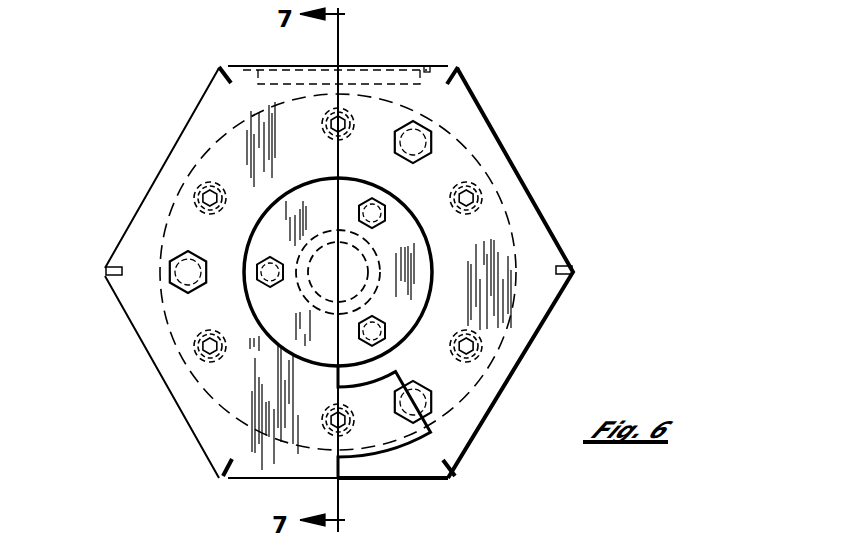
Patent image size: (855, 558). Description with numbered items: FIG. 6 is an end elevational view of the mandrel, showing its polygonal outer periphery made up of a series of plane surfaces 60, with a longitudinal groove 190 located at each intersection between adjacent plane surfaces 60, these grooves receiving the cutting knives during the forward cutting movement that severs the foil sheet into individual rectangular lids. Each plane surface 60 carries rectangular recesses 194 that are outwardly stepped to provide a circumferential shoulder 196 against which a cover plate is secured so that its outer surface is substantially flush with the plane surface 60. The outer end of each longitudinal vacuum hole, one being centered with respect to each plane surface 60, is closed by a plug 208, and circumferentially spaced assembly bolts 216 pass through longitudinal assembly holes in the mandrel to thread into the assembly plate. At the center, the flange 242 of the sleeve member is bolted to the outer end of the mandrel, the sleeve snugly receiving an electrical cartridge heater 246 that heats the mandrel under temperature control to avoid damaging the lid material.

The plane surface 60 is at (238, 66).
The longitudinal groove 190 is at (220, 66).
The rectangular recess 194 is at (370, 70).
The circumferential shoulder 196 is at (427, 70).
The plug 208 is at (203, 195).
The assembly bolt 216 is at (432, 136).
The flange 242 is at (252, 236).
The electrical cartridge heater 246 is at (367, 280).